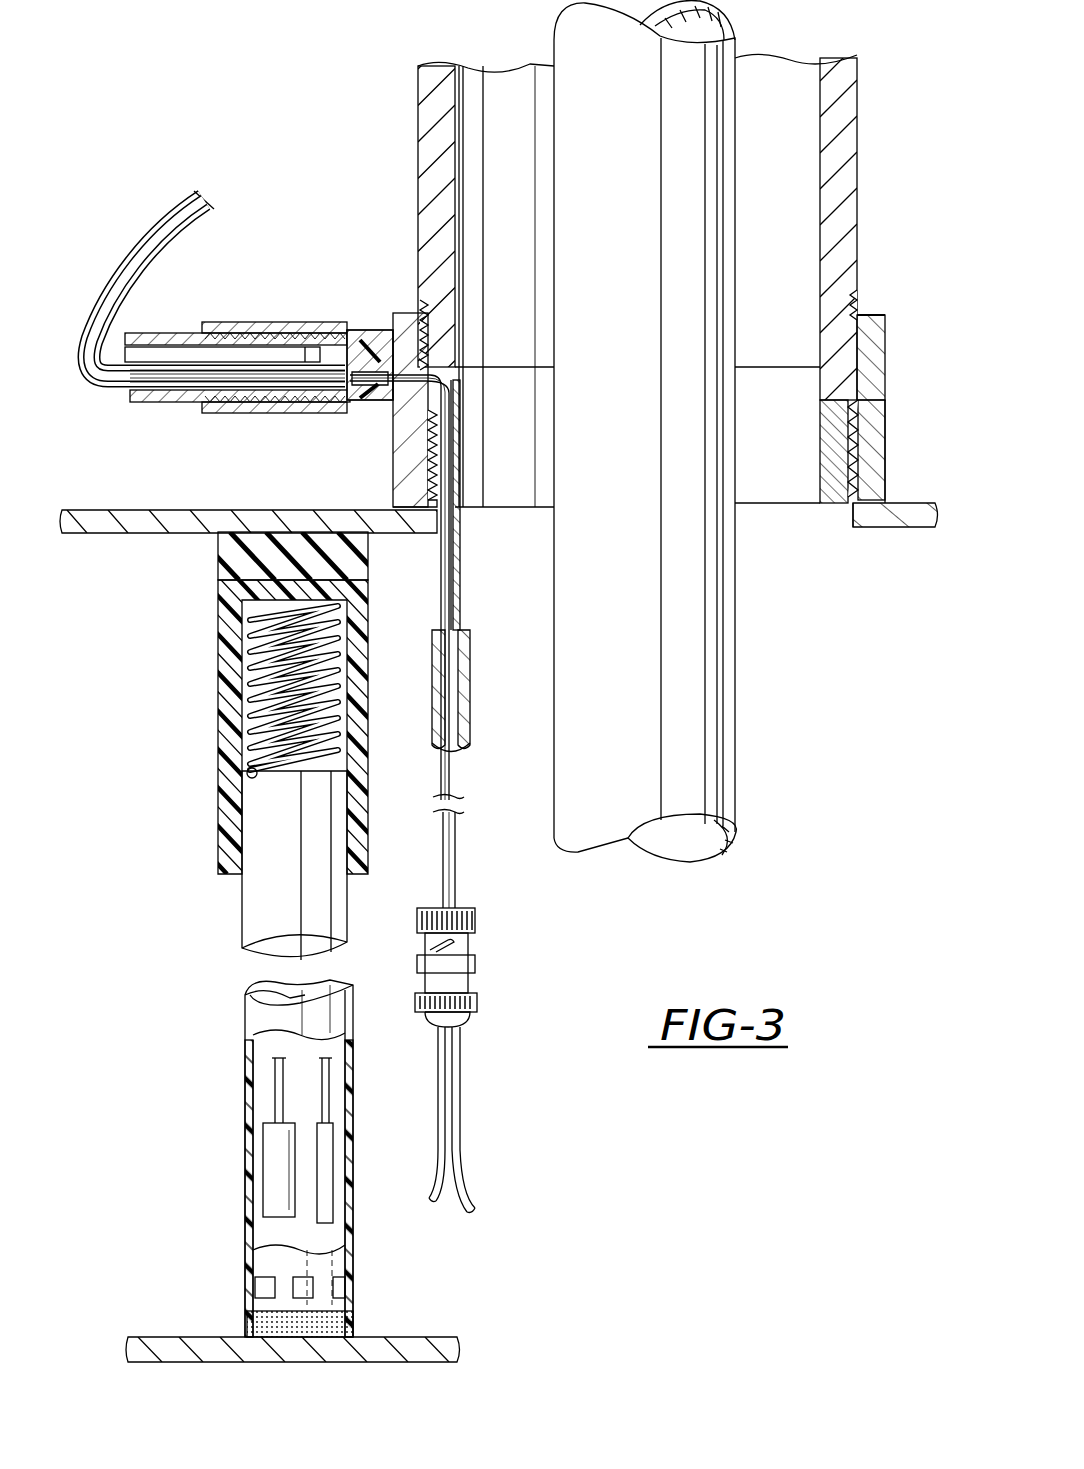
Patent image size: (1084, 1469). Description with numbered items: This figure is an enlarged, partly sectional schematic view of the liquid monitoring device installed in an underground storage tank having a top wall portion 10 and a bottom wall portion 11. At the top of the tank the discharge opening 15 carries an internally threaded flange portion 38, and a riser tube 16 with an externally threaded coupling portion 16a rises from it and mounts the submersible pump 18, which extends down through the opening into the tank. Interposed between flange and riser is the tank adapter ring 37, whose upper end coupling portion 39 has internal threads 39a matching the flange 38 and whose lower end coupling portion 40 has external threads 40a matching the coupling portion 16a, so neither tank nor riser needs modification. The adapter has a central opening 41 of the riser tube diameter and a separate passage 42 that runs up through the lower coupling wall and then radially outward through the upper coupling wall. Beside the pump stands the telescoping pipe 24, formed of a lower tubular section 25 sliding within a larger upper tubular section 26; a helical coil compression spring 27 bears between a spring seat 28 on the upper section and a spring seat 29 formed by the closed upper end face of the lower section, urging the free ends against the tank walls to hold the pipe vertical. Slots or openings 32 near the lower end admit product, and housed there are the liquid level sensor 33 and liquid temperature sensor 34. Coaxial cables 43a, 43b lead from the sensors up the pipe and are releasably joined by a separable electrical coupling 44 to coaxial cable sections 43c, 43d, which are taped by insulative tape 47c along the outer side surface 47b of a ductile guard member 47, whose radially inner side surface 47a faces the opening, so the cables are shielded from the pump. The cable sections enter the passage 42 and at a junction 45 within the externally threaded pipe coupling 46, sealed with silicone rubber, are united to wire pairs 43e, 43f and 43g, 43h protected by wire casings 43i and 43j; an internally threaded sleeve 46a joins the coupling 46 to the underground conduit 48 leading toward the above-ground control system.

The top wall portion 10 is at (146, 530).
The bottom wall portion 11 is at (405, 1333).
The discharge opening 15 is at (862, 482).
The riser tube 16 is at (850, 176).
The externally threaded coupling portion 16a is at (858, 296).
The submersible pump 18 is at (624, 196).
The pipe 24 is at (338, 714).
The lower tubular section 25 is at (290, 873).
The upper tubular section 26 is at (228, 712).
The helical coil compression spring 27 is at (233, 670).
The spring seat 28 is at (263, 576).
The spring seat 29 is at (245, 786).
The slots or openings 32 is at (347, 1291).
The liquid level sensor 33 is at (278, 1196).
The liquid temperature sensor 34 is at (328, 1168).
The tank adapter ring 37 is at (830, 400).
The internally threaded flange portion 38 is at (866, 447).
The upper end coupling portion 39 is at (882, 386).
The internal threads 39a is at (884, 330).
The lower end coupling portion 40 is at (846, 520).
The external threads 40a is at (840, 504).
The central opening 41 is at (466, 432).
The passage 42 is at (460, 370).
The coaxial cable 43a is at (277, 1070).
The coaxial cable 43b is at (458, 1090).
The coaxial cable section 43c is at (452, 878).
The coaxial cable section 43d is at (452, 797).
The wire 43e is at (366, 345).
The wire 43f is at (247, 270).
The wire 43g is at (249, 255).
The wire 43h is at (237, 253).
The wire casing 43i is at (158, 222).
The wire casing 43j is at (208, 205).
The separable electrical coupling 44 is at (476, 958).
The junction 45 is at (362, 346).
The externally threaded pipe coupling 46 is at (370, 400).
The internally threaded sleeve 46a is at (251, 331).
The guard member 47 is at (461, 614).
The radially inner side surface 47a is at (462, 560).
The outer side surface 47b is at (446, 590).
The insulative tape 47c is at (470, 688).
The underground conduit 48 is at (176, 334).